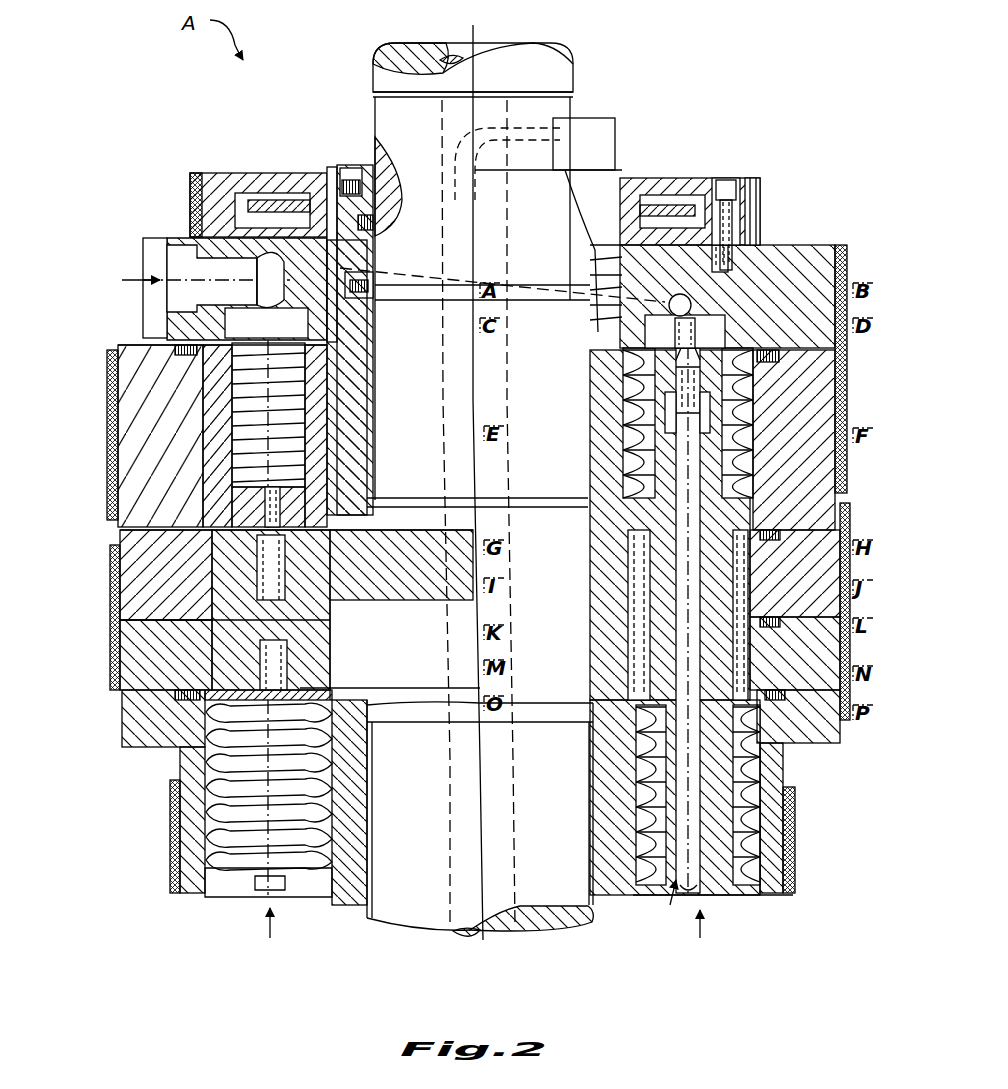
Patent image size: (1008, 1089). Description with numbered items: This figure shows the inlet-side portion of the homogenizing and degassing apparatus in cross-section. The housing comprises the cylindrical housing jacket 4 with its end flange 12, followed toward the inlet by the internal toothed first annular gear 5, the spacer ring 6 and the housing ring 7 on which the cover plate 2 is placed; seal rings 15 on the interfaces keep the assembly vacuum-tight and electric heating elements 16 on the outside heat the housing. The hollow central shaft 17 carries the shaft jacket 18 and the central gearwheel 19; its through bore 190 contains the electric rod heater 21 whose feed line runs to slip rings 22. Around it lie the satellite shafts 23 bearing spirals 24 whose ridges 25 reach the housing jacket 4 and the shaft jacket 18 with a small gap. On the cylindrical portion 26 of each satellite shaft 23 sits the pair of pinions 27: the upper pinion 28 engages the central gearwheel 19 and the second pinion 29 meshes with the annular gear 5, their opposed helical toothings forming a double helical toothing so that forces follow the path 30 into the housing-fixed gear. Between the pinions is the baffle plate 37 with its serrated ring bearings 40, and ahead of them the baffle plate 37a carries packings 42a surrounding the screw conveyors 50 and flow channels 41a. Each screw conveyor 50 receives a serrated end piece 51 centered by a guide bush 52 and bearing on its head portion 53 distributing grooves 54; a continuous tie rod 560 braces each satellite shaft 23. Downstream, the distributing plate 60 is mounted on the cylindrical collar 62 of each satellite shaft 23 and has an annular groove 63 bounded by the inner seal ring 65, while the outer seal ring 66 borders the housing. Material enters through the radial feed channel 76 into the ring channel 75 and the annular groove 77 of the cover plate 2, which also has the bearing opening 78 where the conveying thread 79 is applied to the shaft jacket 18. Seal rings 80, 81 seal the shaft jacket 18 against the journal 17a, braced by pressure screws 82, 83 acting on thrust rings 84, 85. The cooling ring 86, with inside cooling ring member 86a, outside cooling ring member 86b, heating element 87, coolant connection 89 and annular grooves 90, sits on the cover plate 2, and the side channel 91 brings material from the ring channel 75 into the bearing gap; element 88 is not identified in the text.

The cover plate 2 is at (200, 330).
The housing jacket 4 is at (772, 840).
The first annular gear 5 is at (145, 655).
The spacer ring 6 is at (130, 597).
The housing ring 7 is at (135, 366).
The end flange 12 is at (815, 722).
The seal rings 15 is at (140, 553).
The electric heating elements 16 is at (112, 395).
The central shaft 17 is at (540, 70).
The cylindrical journal 17a is at (538, 230).
The shaft jacket 18 is at (345, 905).
The central gearwheel 19 is at (415, 580).
The electric rod heater 21 is at (518, 930).
The slip rings 22 is at (586, 150).
The satellite shaft 23 is at (668, 900).
The spirals 24 is at (318, 868).
The ridges 25 is at (225, 875).
The cylindrical portion 26 is at (840, 480).
The pair of pinions 27 is at (592, 612).
The upper pinion 28 is at (640, 565).
The second pinion 29 is at (640, 682).
The path for the flux of forces 30 is at (505, 598).
The baffle plate 37 is at (640, 630).
The baffle plate 37a is at (640, 505).
The internal serrated ring bearings 40 is at (815, 545).
The flow channels 41a is at (330, 472).
The packings 42a is at (315, 438).
The screw conveyor 50 is at (700, 392).
The serrated end piece 51 is at (770, 250).
The guide bush 52 is at (846, 402).
The cylindrical head portion 53 is at (640, 380).
The distributing grooves 54 is at (732, 290).
The distributing plate 60 is at (200, 735).
The cylindrical collar 62 is at (645, 718).
The annular groove 63 is at (372, 668).
The inner seal ring 65 is at (636, 700).
The outer seal ring 66 is at (778, 775).
The ring channel 75 is at (730, 220).
The radial feed channel 76 is at (215, 265).
The annular groove 77 is at (845, 250).
The bearing opening 78 is at (682, 297).
The conveying thread 79 is at (602, 280).
The seal ring 80 is at (408, 376).
The seal ring 81 is at (374, 225).
The pressure screw 82 is at (362, 298).
The pressure screw 83 is at (331, 250).
The thrust ring 84 is at (368, 288).
The thrust ring 85 is at (384, 190).
The cooling ring 86 is at (218, 205).
The inside cooling ring member 86a is at (660, 200).
The outside cooling ring member 86b is at (752, 205).
The heating element 87 is at (196, 205).
The cover housing 88 is at (275, 205).
The coolant connection 89 is at (265, 196).
The annular grooves 90 is at (350, 178).
The side channel 91 is at (272, 275).
The through bore 190 is at (455, 57).
The tie rod 560 is at (735, 880).